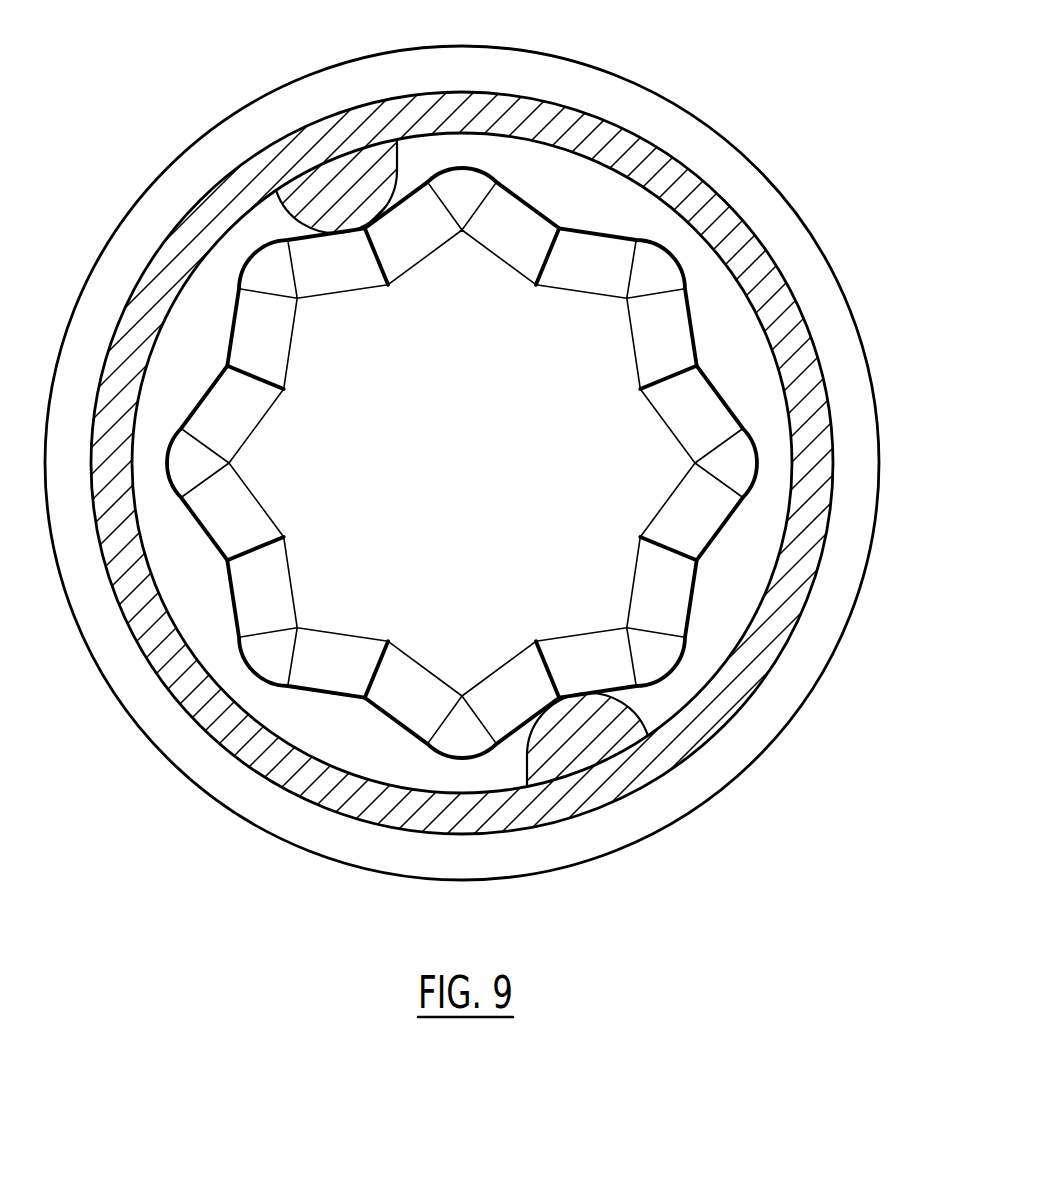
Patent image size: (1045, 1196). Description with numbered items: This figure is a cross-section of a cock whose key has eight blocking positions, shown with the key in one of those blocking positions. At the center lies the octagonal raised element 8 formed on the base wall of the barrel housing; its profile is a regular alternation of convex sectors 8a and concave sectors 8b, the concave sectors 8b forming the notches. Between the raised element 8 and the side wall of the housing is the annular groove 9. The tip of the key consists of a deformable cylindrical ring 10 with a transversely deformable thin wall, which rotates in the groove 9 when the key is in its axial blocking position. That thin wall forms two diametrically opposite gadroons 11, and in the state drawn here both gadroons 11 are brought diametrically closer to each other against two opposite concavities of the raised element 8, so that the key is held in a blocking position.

The raised element 8 is at (447, 555).
The convex sectors 8a is at (760, 465).
The concave sectors 8b is at (700, 557).
The annular groove 9 is at (108, 265).
The ring 10 is at (205, 702).
The gadroons 11 is at (335, 173).